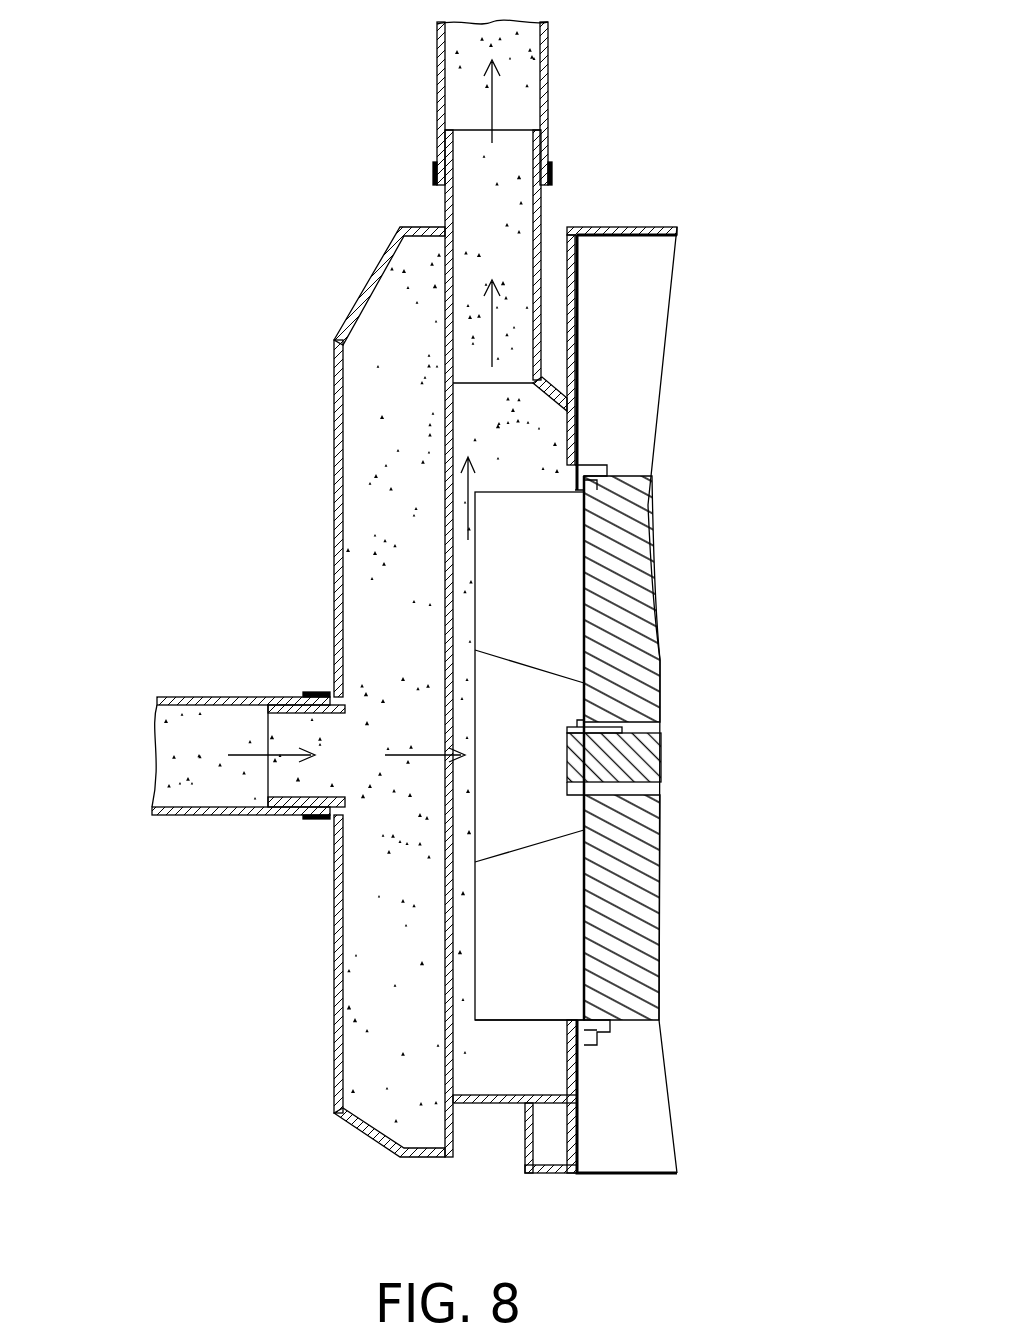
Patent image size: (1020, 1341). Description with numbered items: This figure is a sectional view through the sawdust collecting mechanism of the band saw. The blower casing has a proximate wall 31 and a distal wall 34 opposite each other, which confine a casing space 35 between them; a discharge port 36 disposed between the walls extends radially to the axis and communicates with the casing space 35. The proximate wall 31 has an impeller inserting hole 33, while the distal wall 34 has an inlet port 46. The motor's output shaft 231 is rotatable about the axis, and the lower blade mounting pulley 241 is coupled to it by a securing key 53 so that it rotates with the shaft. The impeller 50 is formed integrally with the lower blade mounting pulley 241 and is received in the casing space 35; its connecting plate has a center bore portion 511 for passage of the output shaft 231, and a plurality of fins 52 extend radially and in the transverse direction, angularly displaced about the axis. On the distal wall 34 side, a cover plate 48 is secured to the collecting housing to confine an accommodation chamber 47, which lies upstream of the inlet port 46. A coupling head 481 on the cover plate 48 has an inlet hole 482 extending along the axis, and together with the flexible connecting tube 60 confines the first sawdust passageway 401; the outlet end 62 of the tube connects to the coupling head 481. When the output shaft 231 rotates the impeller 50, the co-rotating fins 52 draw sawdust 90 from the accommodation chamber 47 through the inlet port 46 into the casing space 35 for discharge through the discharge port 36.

The discharge port 36 is at (543, 215).
The distal wall 34 is at (448, 400).
The casing space 35 is at (547, 408).
The proximate wall 31 is at (577, 423).
The impeller inserting hole 33 is at (575, 466).
The center bore portion 511 is at (578, 720).
The securing key 53 is at (613, 731).
The output shaft 231 is at (647, 742).
The lower blade mounting pulley 241 is at (627, 1032).
The impeller 50 is at (530, 1028).
The fins 52 is at (492, 1015).
The cover plate 48 is at (340, 473).
The coupling head 481 is at (288, 708).
The inlet hole 482 is at (333, 723).
The accommodation chamber 47 is at (373, 1003).
The inlet port 46 is at (453, 880).
The flexible connecting tube 60 is at (221, 677).
The outlet end 62 is at (240, 702).
The first sawdust passageway 401 is at (173, 783).
The sawdust 90 is at (235, 787).